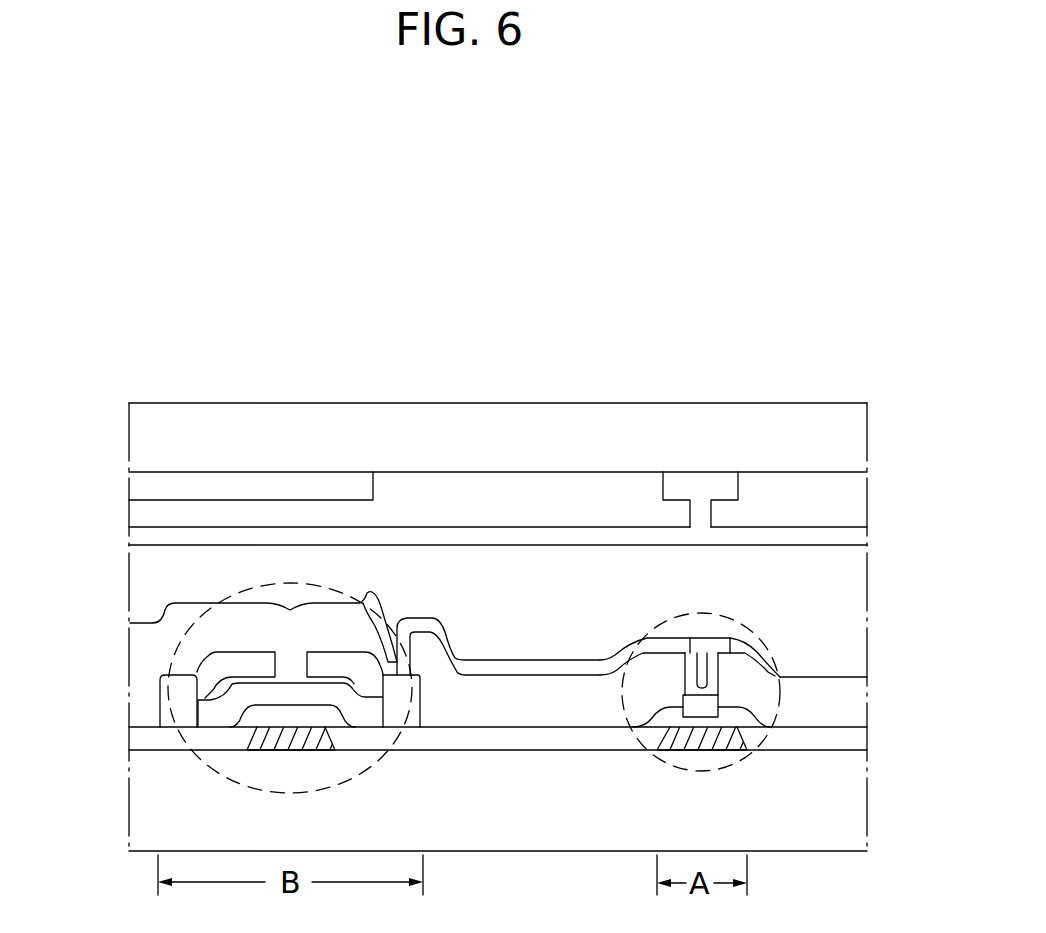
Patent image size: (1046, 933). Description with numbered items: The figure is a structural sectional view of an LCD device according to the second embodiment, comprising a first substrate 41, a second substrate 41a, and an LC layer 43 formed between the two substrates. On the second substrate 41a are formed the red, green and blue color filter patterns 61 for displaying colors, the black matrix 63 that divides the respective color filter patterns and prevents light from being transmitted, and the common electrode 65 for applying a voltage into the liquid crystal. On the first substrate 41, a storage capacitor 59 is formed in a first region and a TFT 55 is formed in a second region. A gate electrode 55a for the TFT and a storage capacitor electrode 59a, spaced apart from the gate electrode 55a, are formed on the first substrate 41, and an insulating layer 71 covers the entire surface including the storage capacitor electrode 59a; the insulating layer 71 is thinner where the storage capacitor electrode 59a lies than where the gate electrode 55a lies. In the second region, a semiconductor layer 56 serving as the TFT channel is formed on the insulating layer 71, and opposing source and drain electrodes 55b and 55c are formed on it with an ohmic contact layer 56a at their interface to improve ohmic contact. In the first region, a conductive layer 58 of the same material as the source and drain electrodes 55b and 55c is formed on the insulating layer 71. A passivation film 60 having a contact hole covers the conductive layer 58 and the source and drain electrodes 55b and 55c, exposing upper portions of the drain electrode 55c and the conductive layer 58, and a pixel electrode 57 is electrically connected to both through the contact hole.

The second substrate 41a is at (850, 427).
The black matrix 63 is at (715, 483).
The color filter patterns 61 is at (850, 505).
The common electrode 65 is at (850, 537).
The LC layer 43 is at (850, 578).
The pixel electrode 57 is at (650, 643).
The passivation film 60 is at (840, 687).
The conductive layer 58 is at (703, 705).
The insulating layer 71 is at (853, 740).
The first substrate 41 is at (853, 800).
The TFT 55 is at (222, 772).
The gate electrode 55a is at (250, 746).
The source electrode 55b is at (180, 698).
The drain electrode 55c is at (335, 663).
The semiconductor layer 56 is at (215, 713).
The ohmic contact layer 56a is at (203, 697).
The storage capacitor electrode 59a is at (683, 747).
The storage capacitor 59 is at (748, 755).